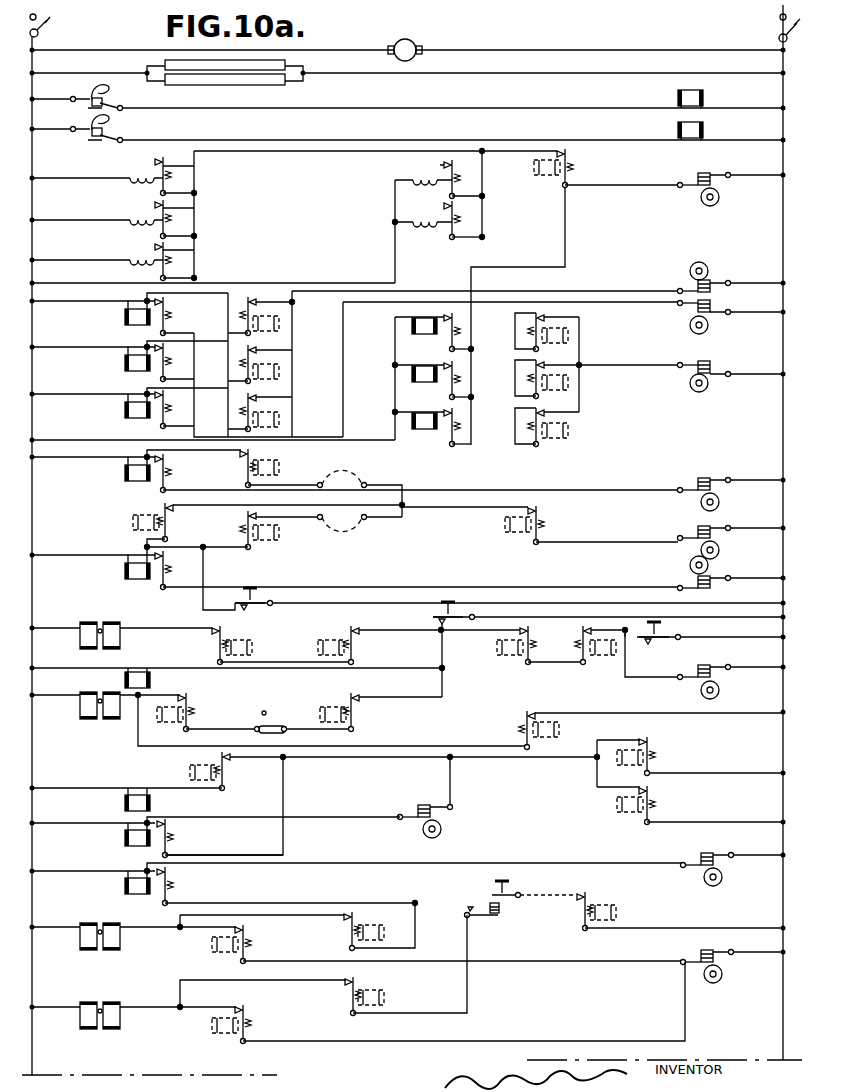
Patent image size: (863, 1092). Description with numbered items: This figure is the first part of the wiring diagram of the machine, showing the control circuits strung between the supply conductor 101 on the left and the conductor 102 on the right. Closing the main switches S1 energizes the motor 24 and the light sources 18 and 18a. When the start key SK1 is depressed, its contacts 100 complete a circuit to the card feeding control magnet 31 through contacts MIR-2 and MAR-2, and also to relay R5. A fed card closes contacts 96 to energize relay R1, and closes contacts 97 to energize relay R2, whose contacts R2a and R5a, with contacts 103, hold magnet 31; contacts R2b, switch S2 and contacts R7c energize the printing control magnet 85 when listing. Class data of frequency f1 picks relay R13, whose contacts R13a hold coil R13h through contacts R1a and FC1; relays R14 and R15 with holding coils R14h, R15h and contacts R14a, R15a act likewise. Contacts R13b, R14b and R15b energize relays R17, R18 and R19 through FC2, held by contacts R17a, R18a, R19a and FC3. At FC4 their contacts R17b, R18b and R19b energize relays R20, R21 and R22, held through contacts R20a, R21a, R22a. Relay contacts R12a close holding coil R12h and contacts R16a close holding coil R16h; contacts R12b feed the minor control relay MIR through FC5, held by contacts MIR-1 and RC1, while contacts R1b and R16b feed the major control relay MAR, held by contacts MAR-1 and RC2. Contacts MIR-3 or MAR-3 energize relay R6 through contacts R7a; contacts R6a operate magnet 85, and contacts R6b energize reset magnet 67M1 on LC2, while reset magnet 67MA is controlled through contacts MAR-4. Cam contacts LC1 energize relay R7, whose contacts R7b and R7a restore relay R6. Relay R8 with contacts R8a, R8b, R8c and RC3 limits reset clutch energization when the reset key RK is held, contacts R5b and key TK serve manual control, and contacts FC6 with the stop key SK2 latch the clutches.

The main switch S1 is at (45, 28).
The motor 24 is at (418, 47).
The light source 18 is at (170, 64).
The light source 18a is at (272, 85).
The contacts 96 is at (106, 104).
The contacts 97 is at (106, 134).
The relay R1 is at (678, 98).
The relay R2 is at (678, 130).
The holding coil of relay R13 R13h is at (130, 178).
The contacts of relay R13 R13a is at (195, 167).
The holding coil of relay R14 R14h is at (130, 220).
The contacts of relay R14 R14a is at (195, 209).
The holding coil of relay R15 R15h is at (130, 260).
The contacts of relay R15 R15a is at (195, 251).
The holding coil of relay R12 R12h is at (423, 178).
The holding coil of relay R16 R16h is at (416, 220).
The contacts of relay R12 R12a is at (453, 158).
The contacts of relay R16 R16a is at (460, 214).
The contacts of relay R1 R1a is at (567, 147).
The cam contacts FC1 is at (702, 173).
The relay R17 is at (125, 318).
The contacts of relay R17 R17a is at (148, 300).
The relay R18 is at (125, 362).
The contacts of relay R18 R18a is at (148, 347).
The relay R19 is at (125, 408).
The contacts of relay R19 R19a is at (148, 394).
The contacts of relay R13 R13b is at (252, 300).
The relay R13 is at (282, 323).
The contacts of relay R14 R14b is at (258, 349).
The relay R14 is at (282, 371).
The contacts of relay R15 R15b is at (258, 397).
The relay R15 is at (282, 419).
The relay R20 is at (412, 329).
The contacts of relay R20 R20a is at (458, 322).
The relay R21 is at (412, 377).
The contacts of relay R21 R21a is at (458, 370).
The relay R22 is at (412, 424).
The contacts of relay R22 R22a is at (458, 417).
The contacts of relay R17 R17b is at (538, 312).
The contacts of relay R18 R18b is at (545, 360).
The contacts of relay R19 R19b is at (545, 408).
The cam contacts FC2 is at (714, 281).
The cam contacts FC3 is at (715, 303).
The cam contacts FC4 is at (715, 363).
The conductor 102 is at (783, 408).
The conductor 101 is at (32, 498).
The minor control relay MIR is at (125, 477).
The contacts of relay MIR MIR-1 is at (156, 453).
The contacts of relay R12 R12b is at (295, 463).
The contacts of relay R1 R1b is at (165, 506).
The contacts of relay R16 R16b is at (246, 517).
The major control relay MAR is at (125, 570).
The contacts of relay MAR MAR-1 is at (152, 556).
The key TK is at (252, 594).
The contacts of relay R2 R2a is at (537, 504).
The cam contacts RC1 is at (714, 480).
The cam contacts FC5 is at (714, 527).
The cam contacts RC2 is at (714, 577).
The card feeding control magnet 31 is at (108, 624).
The contacts of relay MIR MIR-2 is at (263, 632).
The contacts of relay MAR MAR-2 is at (330, 640).
The start key SK1 is at (452, 608).
The contacts 100 is at (432, 626).
The relay R5 is at (140, 672).
The contacts of relay R5 R5a is at (528, 626).
The stop key SK2 is at (675, 626).
The contacts 103 is at (652, 663).
The cam controlled contacts FC6 is at (700, 668).
The printing control magnet 85 is at (108, 694).
The contacts of relay R2 R2b is at (192, 697).
The switch S2 is at (258, 726).
The contacts of relay R7 R7c is at (322, 710).
The contacts of relay R6 R6a is at (530, 710).
The contacts of relay R7 R7a is at (230, 765).
The relay R6 is at (137, 797).
The contacts of relay MIR MIR-3 is at (645, 737).
The contacts of relay MAR MAR-3 is at (655, 788).
The cam contacts LC1 is at (410, 805).
The relay R7 is at (125, 838).
The contacts of relay R7 R7b is at (170, 816).
The relay R8 is at (125, 886).
The contacts of relay R8 R8a is at (172, 874).
The cam contacts RC3 is at (717, 854).
The contacts of relay R8 R8b is at (352, 912).
The reset magnet 67M1 is at (112, 952).
The contacts of relay R6 R6b is at (243, 924).
The reset key RK is at (521, 898).
The contacts of relay R5 R5b is at (581, 893).
The cam contacts LC2 is at (717, 951).
The reset magnet 67MA is at (112, 1032).
The contacts of relay MAR MAR-4 is at (250, 1006).
The contacts of relay R8 R8c is at (348, 980).